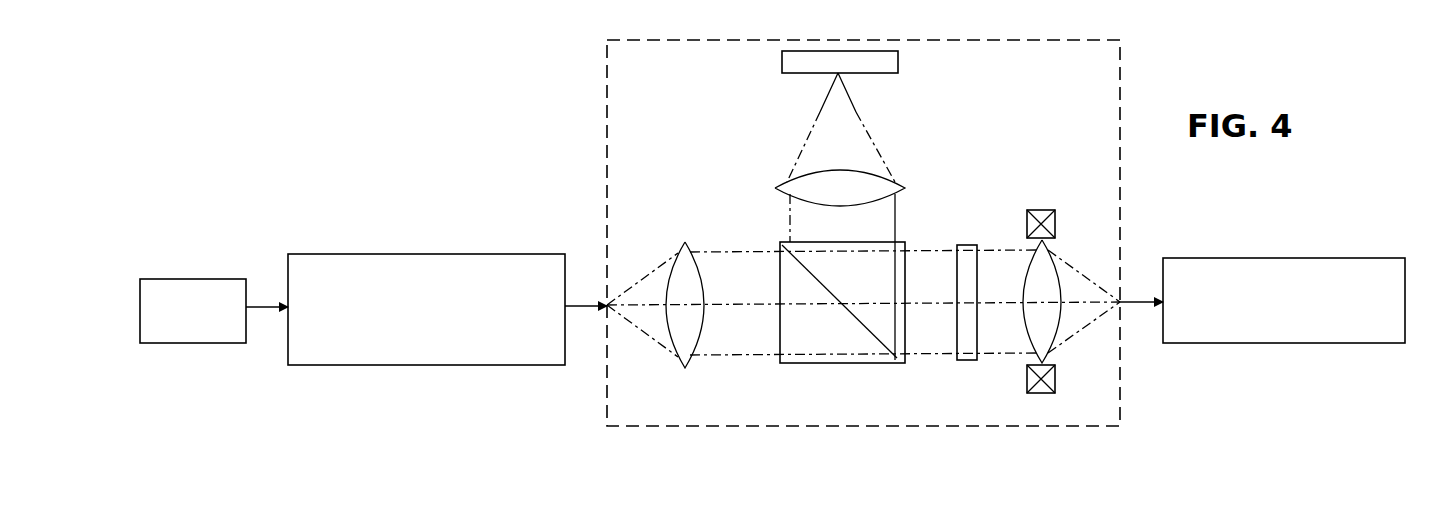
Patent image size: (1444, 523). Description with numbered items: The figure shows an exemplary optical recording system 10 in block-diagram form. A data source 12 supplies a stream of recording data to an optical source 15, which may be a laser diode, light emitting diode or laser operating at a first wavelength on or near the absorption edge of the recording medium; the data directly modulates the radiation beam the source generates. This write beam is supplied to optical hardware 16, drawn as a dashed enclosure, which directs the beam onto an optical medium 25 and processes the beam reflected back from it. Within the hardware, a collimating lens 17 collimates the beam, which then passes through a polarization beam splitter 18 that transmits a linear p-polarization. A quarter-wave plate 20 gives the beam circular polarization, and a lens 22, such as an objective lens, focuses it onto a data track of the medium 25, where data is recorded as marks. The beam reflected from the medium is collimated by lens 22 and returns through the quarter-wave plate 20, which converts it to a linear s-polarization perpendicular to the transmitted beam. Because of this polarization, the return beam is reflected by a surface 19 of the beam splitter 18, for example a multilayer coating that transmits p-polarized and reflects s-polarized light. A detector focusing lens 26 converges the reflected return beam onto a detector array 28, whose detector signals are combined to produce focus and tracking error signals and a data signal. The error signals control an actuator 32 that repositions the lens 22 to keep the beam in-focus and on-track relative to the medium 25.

The optical recording system 10 is at (405, 98).
The data source 12 is at (197, 278).
The optical source 15 is at (425, 253).
The optical hardware 16 is at (607, 77).
The collimating lens 17 is at (678, 358).
The polarization beam splitter 18 is at (780, 288).
The surface 19 is at (860, 325).
The quarter-wave plate 20 is at (972, 245).
The lens 22 is at (1022, 295).
The optical medium 25 is at (1265, 258).
The detector focusing lens 26 is at (785, 188).
The detector array 28 is at (782, 57).
The actuator 32 is at (1055, 215).